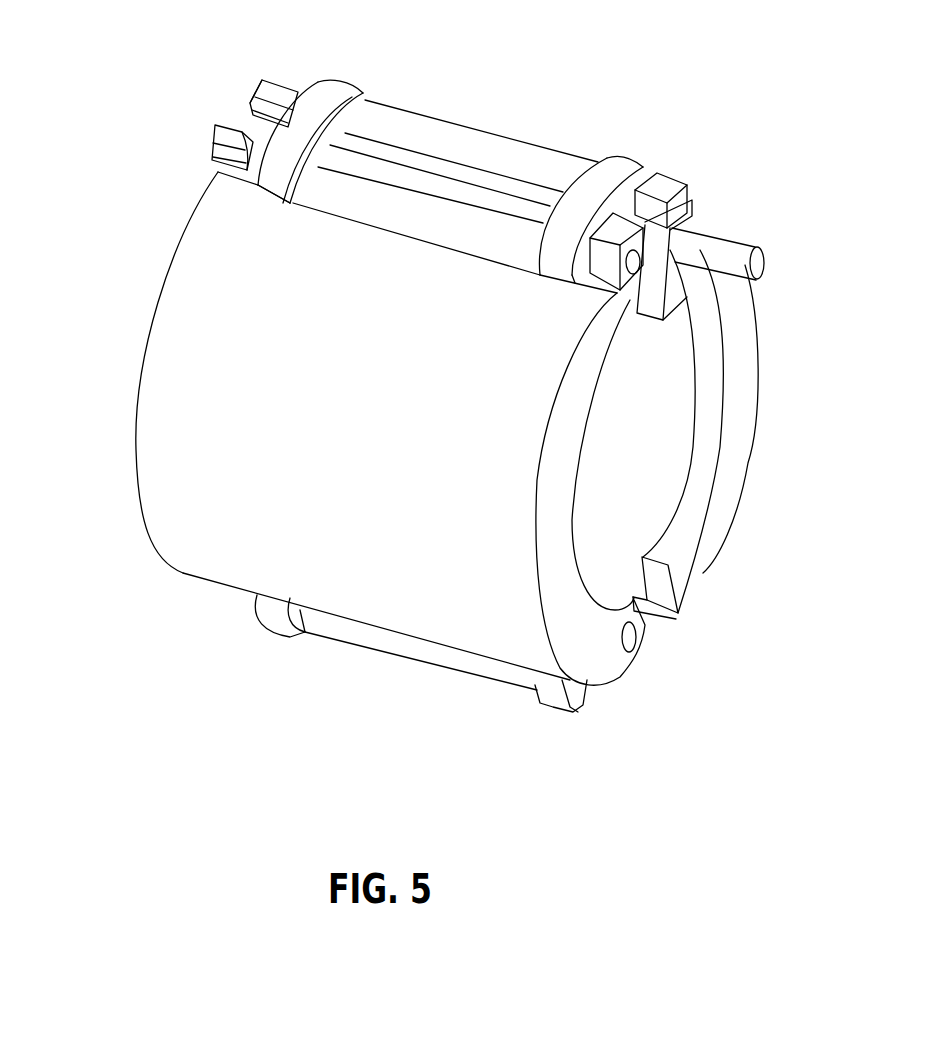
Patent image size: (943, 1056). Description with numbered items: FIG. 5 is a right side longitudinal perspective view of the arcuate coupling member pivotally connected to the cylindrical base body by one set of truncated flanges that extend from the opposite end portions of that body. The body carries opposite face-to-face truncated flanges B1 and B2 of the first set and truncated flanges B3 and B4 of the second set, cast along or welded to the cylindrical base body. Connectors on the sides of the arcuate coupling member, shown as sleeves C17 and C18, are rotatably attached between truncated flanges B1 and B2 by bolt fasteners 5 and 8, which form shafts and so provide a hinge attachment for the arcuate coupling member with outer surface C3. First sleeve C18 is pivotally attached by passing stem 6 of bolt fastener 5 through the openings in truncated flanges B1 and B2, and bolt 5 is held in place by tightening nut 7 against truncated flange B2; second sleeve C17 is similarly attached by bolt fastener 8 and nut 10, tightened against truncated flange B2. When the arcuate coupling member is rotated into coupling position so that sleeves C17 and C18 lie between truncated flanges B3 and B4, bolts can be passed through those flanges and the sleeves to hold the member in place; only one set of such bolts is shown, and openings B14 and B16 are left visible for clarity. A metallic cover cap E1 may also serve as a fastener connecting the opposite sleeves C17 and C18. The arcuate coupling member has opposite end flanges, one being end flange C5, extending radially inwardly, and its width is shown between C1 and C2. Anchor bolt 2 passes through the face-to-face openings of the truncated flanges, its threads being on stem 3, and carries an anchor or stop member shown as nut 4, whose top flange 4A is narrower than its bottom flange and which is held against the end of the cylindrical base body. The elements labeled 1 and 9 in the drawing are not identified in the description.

The upper guide rod 1 is at (377, 147).
The anchor bolt 2 is at (255, 98).
The stem 3 is at (743, 252).
The nut 4 is at (680, 283).
The top flange 4A is at (685, 218).
The bolt fastener 5 is at (283, 82).
The stem 6 is at (687, 213).
The nut 7 is at (660, 200).
The bolt fastener 8 is at (223, 125).
The pin hole 9 is at (662, 318).
The nut 10 is at (583, 273).
The truncated flange B1 is at (333, 83).
The truncated flange B2 is at (607, 172).
The truncated flange B3 is at (273, 620).
The truncated flange B4 is at (560, 697).
The opening B14 is at (640, 643).
The opening B16 is at (563, 693).
The width boundary of coupler C1 is at (705, 572).
The width boundary of coupler C2 is at (147, 350).
The arcuate coupling member outer surface C3 is at (300, 485).
The end flange C5 is at (585, 438).
The sleeve C17 is at (310, 179).
The sleeve C18 is at (393, 123).
The metallic cover cap E1 is at (653, 622).